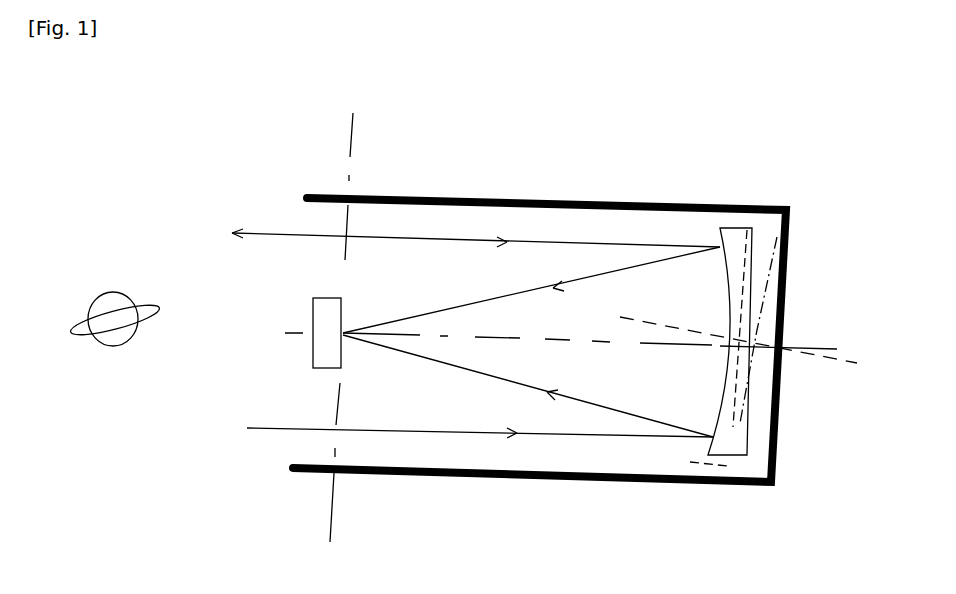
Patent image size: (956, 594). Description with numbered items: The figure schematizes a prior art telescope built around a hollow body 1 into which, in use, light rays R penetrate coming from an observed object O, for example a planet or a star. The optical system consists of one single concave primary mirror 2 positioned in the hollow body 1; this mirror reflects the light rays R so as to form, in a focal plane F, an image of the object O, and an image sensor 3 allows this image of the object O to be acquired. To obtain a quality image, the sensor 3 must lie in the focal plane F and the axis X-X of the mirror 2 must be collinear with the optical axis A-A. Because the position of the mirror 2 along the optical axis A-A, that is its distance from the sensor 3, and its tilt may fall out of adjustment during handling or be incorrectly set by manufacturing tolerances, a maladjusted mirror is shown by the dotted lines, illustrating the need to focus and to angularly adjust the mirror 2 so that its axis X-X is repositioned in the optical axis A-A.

The hollow body 1 is at (573, 203).
The concave primary mirror 2 is at (747, 448).
The image sensor 3 is at (313, 305).
The light rays R is at (257, 230).
The optical axis A is at (204, 334).
The axis of the mirror X is at (726, 350).
The observed object O is at (107, 292).
The focal plane F is at (352, 142).